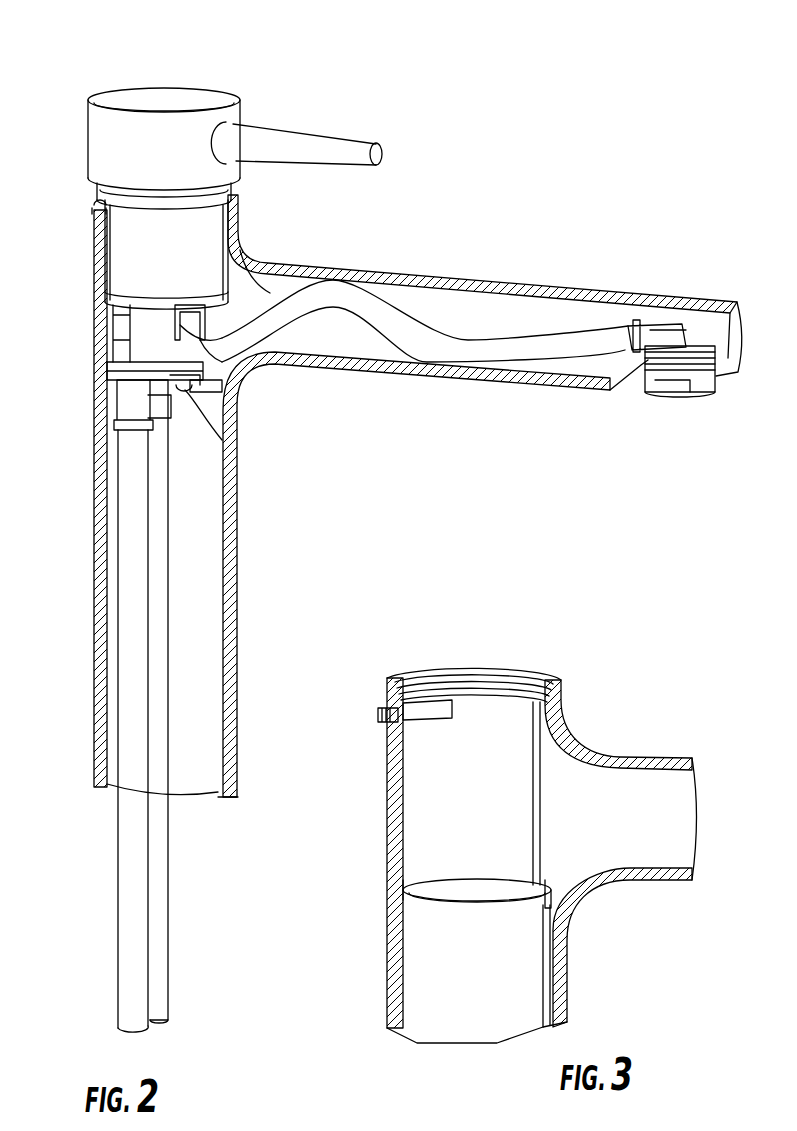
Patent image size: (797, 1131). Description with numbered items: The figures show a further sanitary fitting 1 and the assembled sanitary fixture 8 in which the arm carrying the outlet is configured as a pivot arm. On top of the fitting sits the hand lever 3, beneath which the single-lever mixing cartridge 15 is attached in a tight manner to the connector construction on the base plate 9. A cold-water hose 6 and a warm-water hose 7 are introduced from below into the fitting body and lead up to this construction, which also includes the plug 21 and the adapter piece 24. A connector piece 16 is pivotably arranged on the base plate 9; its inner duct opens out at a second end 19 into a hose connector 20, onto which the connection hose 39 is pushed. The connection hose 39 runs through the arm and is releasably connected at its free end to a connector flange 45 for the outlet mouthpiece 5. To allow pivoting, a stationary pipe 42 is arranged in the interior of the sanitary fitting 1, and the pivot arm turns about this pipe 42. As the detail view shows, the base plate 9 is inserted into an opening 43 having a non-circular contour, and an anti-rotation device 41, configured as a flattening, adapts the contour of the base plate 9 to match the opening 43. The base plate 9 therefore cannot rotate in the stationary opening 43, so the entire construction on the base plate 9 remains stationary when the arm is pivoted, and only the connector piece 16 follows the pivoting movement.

In FIG. 2, the sanitary fitting 1 is at (505, 165).
In FIG. 2, the hand lever 3 is at (175, 143).
In FIG. 2, the outlet mouthpiece 5 is at (702, 385).
In FIG. 2, the cold-water hose 6 is at (130, 843).
In FIG. 2, the warm-water hose 7 is at (156, 881).
In FIG. 2, the sanitary fixture 8 is at (88, 303).
In FIG. 3, the sanitary fixture 8 is at (376, 854).
In FIG. 2, the base plate 9 is at (118, 368).
In FIG. 2, the single-lever mixing cartridge 15 is at (120, 258).
In FIG. 2, the connector piece 16 is at (198, 392).
In FIG. 2, the second end 19 is at (224, 333).
In FIG. 2, the hose connector 20 is at (245, 355).
In FIG. 2, the plug 21 is at (205, 400).
In FIG. 2, the adapter piece 24 is at (105, 336).
In FIG. 2, the connection hose 39 is at (383, 322).
In FIG. 2, the anti-rotation device 41 is at (212, 392).
In FIG. 2, the pipe 42 is at (226, 541).
In FIG. 3, the pipe 42 is at (402, 893).
In FIG. 3, the opening 43 is at (484, 880).
In FIG. 2, the connector flange 45 is at (668, 332).